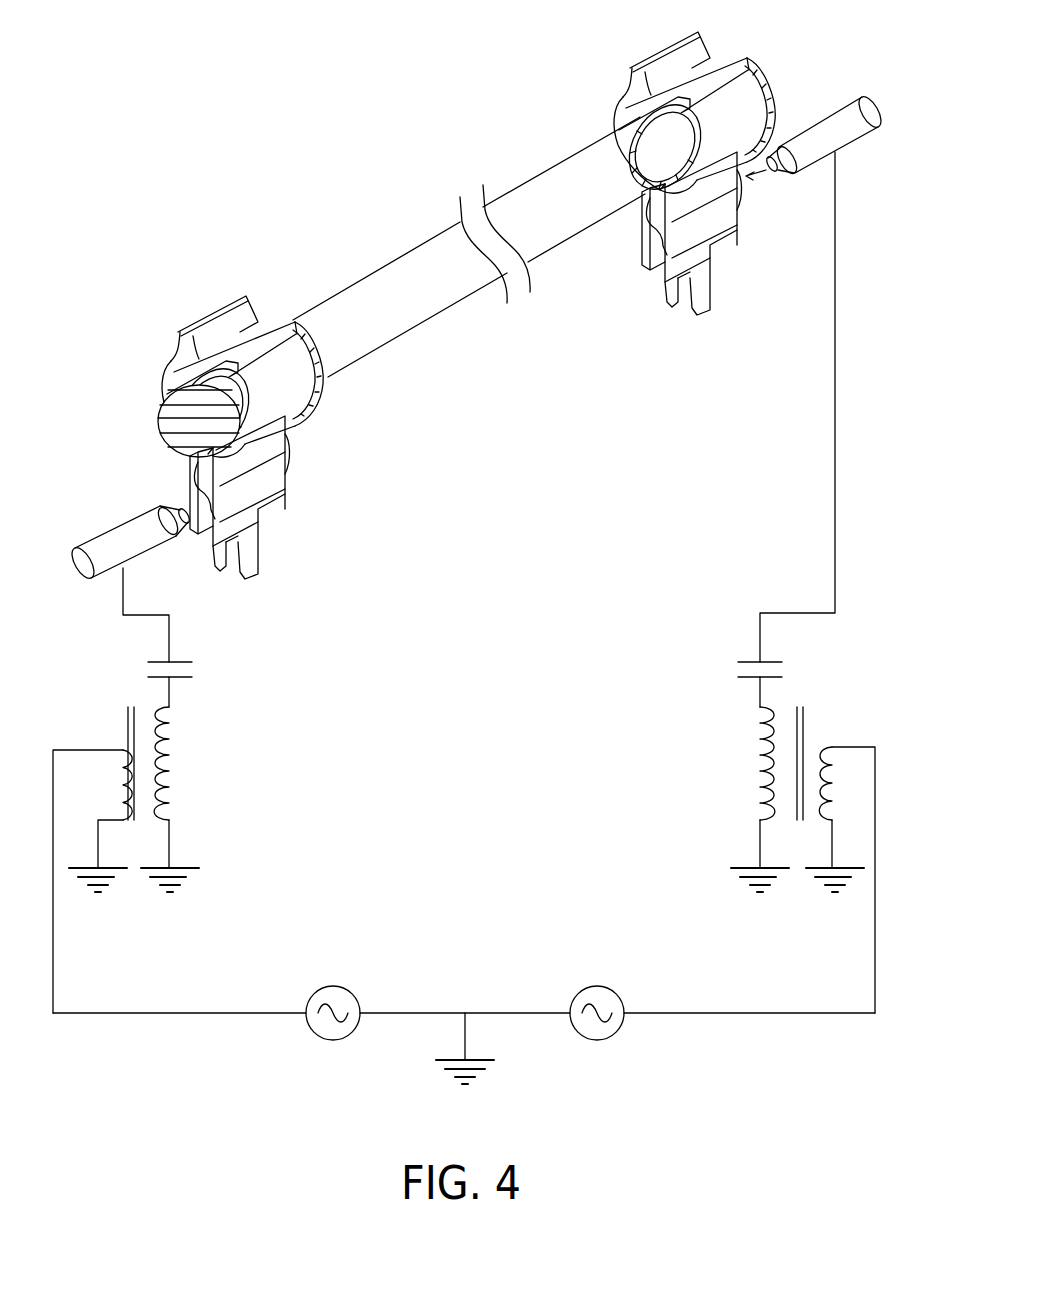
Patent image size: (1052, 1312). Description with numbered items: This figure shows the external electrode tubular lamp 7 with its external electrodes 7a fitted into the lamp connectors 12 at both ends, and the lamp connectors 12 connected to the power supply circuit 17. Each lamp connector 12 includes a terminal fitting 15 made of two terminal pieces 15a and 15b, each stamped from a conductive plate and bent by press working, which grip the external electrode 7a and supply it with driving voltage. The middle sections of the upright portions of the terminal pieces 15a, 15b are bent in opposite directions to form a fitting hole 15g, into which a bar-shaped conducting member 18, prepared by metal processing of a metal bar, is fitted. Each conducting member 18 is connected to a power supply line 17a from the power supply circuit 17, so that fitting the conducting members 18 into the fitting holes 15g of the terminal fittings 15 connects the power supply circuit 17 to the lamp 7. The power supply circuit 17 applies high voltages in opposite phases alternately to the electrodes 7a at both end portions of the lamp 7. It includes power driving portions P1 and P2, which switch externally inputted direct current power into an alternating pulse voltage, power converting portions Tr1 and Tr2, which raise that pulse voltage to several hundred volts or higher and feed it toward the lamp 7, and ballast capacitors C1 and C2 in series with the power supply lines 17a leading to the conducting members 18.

The external electrode tubular lamp 7 is at (427, 196).
The external electrode 7a is at (635, 68).
The lamp connector 12 is at (742, 262).
The terminal fitting 15 is at (160, 470).
The terminal piece 15a is at (760, 96).
The terminal piece 15b is at (619, 118).
The fitting hole 15g is at (636, 240).
The power supply circuit 17 is at (693, 1073).
The power supply line 17a is at (835, 468).
The conducting member 18 is at (800, 165).
The ballast capacitor C1 is at (189, 669).
The ballast capacitor C2 is at (777, 671).
The power converting portion Tr1 is at (126, 860).
The power converting portion Tr2 is at (803, 860).
The power driving portion P1 is at (333, 1030).
The power driving portion P2 is at (597, 1030).